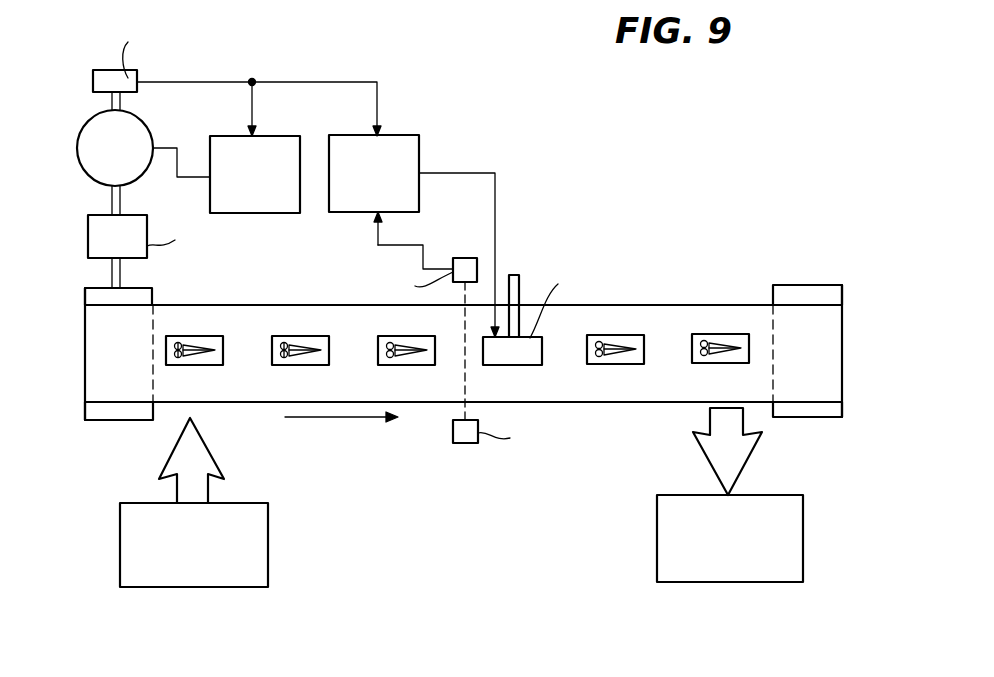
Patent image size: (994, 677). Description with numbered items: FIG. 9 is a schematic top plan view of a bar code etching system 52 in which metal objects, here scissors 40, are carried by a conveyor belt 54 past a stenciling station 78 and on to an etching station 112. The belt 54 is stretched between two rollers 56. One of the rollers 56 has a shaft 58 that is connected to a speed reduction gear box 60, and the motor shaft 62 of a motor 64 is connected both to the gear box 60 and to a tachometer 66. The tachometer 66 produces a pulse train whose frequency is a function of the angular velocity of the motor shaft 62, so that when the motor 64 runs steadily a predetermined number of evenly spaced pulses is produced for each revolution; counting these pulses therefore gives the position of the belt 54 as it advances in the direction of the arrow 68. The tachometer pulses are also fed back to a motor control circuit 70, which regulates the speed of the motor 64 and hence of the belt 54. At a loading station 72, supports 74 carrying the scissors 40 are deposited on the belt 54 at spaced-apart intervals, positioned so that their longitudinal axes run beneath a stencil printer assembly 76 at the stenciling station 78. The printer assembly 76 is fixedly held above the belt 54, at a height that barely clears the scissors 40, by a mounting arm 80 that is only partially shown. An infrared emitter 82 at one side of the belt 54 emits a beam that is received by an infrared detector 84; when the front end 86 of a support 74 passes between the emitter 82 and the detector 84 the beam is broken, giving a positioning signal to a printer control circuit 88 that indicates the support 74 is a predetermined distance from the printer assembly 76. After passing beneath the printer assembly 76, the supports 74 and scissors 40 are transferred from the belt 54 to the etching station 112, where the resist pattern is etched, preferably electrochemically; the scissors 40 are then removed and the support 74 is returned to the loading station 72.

The scissors 40 is at (202, 355).
The bar code etching system 52 is at (734, 219).
The conveyor belt 54 is at (727, 313).
The rollers 56 is at (113, 412).
The shaft 58 is at (113, 272).
The speed reduction gear box 60 is at (90, 237).
The motor shaft 62 is at (113, 200).
The motor 64 is at (85, 143).
The tachometer 66 is at (95, 80).
The arrow 68 is at (332, 418).
The motor control circuit 70 is at (283, 143).
The loading station 72 is at (253, 558).
The supports 74 is at (280, 340).
The stencil printer assembly 76 is at (528, 357).
The stenciling station 78 is at (555, 243).
The mounting arm 80 is at (517, 287).
The infrared emitter 82 is at (460, 443).
The infrared detector 84 is at (463, 265).
The front end 86 is at (435, 352).
The printer control circuit 88 is at (408, 150).
The etching station 112 is at (667, 543).